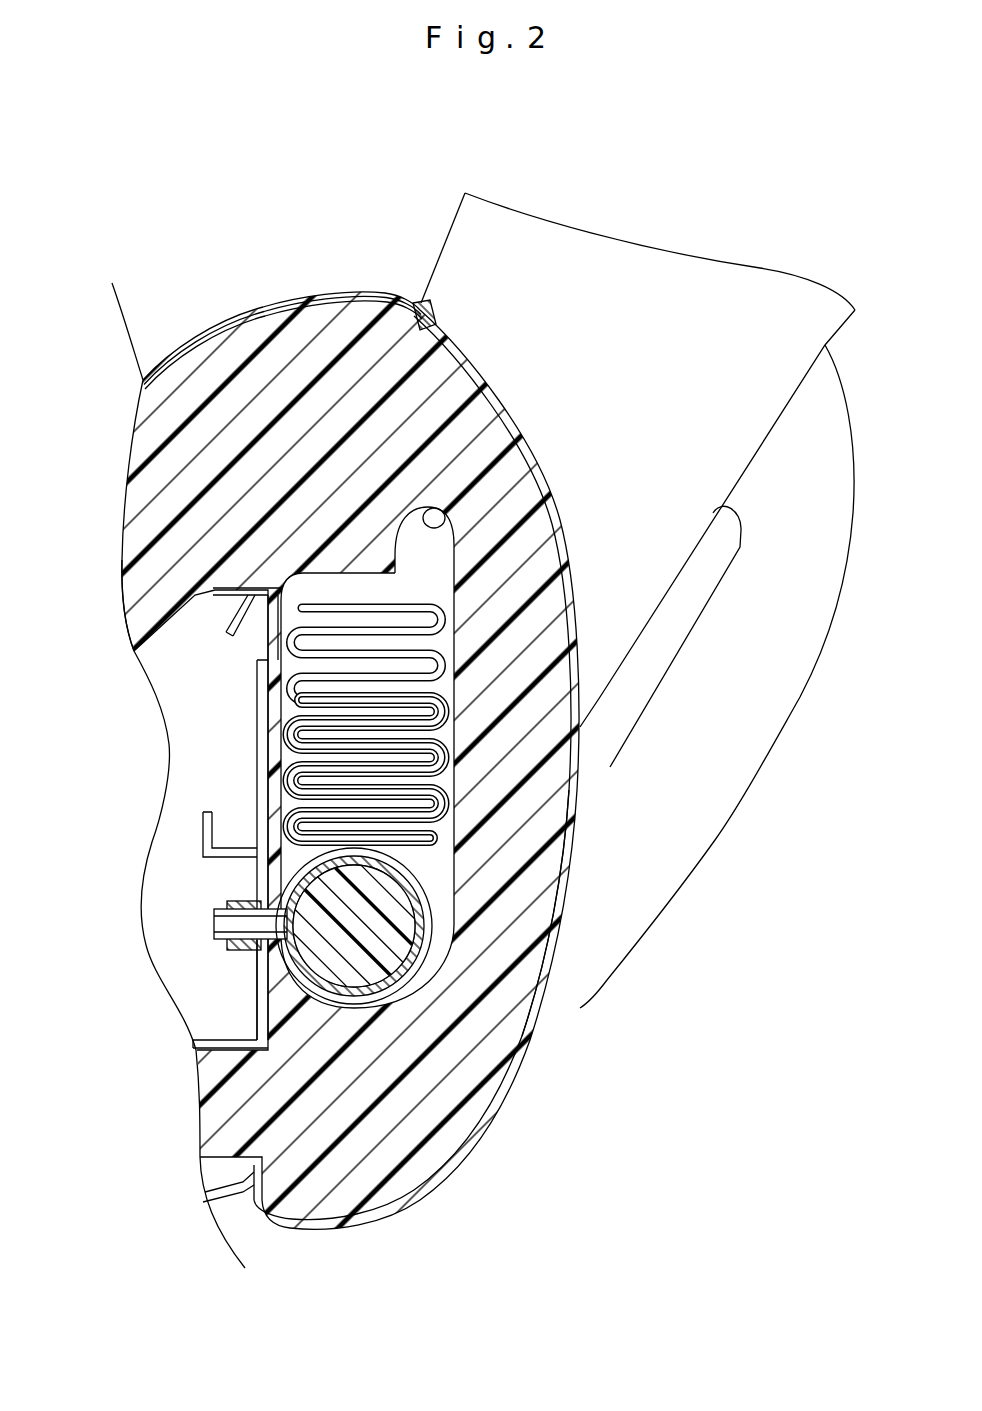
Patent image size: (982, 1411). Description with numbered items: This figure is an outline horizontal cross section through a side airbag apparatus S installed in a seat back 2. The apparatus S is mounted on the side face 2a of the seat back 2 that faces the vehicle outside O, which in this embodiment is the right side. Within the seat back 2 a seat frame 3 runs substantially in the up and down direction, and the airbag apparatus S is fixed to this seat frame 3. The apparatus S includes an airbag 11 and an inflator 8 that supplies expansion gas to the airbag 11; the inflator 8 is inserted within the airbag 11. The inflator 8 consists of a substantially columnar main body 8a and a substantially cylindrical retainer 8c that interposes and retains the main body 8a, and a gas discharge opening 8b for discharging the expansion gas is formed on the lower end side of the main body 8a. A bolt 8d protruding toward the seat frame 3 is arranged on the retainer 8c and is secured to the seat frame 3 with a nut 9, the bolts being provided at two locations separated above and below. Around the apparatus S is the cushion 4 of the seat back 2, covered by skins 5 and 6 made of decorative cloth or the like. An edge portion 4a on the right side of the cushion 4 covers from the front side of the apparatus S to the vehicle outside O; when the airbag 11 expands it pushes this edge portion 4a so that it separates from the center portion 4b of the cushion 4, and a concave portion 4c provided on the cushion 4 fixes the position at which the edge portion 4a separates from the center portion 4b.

The seat back 2 is at (323, 268).
The side face 2a is at (578, 627).
The seat frame 3 is at (262, 744).
The cushion 4 is at (357, 320).
The edge portion 4a is at (520, 500).
The center portion 4b is at (198, 380).
The concave portion 4c is at (520, 492).
The skin 5 is at (247, 313).
The skin 6 is at (580, 860).
The inflator 8 is at (430, 1050).
The main body 8a is at (470, 1085).
The gas discharge opening 8b is at (257, 986).
The retainer 8c is at (533, 1092).
The bolt 8d is at (216, 924).
The nut 9 is at (242, 908).
The airbag 11 is at (753, 455).
The side airbag apparatus S is at (182, 978).
The vehicle outside O is at (818, 1073).